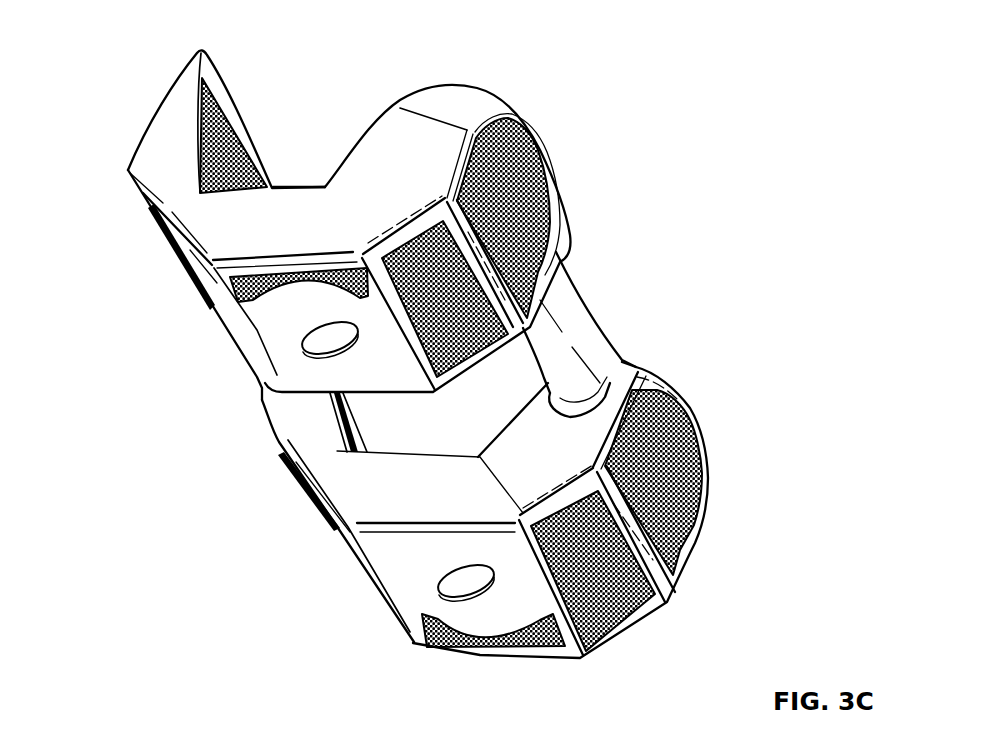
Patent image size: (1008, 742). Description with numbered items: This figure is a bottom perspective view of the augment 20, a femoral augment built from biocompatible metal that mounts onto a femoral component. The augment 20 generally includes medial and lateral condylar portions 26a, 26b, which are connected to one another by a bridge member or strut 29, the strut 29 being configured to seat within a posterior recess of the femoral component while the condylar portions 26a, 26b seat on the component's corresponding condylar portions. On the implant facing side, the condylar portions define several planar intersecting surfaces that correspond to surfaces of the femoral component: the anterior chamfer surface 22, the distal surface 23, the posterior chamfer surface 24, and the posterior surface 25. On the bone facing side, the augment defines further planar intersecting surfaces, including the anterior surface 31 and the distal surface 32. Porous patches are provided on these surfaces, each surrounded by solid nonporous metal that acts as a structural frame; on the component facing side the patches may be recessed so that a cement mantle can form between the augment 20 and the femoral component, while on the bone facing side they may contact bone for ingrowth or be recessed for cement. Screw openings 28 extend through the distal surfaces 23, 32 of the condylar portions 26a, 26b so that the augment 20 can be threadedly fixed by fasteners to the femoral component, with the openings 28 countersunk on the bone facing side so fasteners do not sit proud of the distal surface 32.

The augment 20 is at (127, 58).
The anterior chamfer surface 22 is at (218, 303).
The distal surface 23 is at (270, 303).
The posterior chamfer surface 24 is at (452, 297).
The posterior surface 25 is at (517, 178).
The medial condylar portion 26a is at (682, 371).
The lateral condylar portion 26b is at (529, 91).
The screw opening 28 is at (333, 337).
The strut 29 is at (593, 337).
The anterior surface 31 is at (213, 128).
The distal surface 32 is at (303, 188).